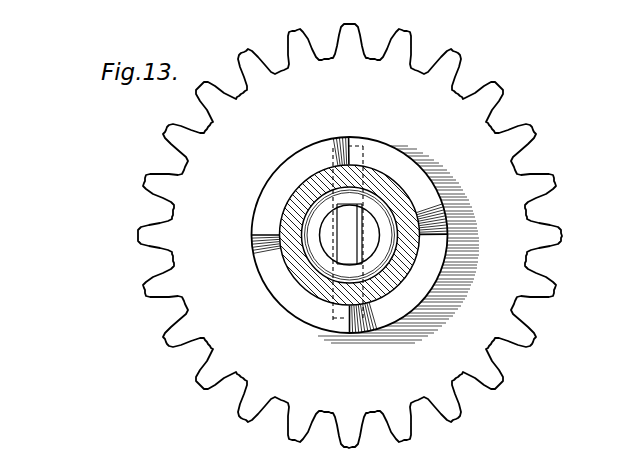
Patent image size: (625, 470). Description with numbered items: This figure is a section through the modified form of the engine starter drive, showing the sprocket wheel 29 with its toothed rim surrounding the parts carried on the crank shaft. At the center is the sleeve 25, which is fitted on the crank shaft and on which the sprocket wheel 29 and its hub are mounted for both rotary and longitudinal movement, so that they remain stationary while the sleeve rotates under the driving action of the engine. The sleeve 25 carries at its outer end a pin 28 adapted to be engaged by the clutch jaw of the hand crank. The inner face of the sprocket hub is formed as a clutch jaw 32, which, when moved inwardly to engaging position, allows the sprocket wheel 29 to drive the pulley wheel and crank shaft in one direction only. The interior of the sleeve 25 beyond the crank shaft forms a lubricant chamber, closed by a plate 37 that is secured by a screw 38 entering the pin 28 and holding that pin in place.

The sleeve 25 is at (298, 272).
The pin 28 is at (342, 231).
The sprocket wheel 29 is at (447, 75).
The clutch jaw 32 is at (311, 150).
The plate 37 is at (372, 242).
The screw 38 is at (381, 204).